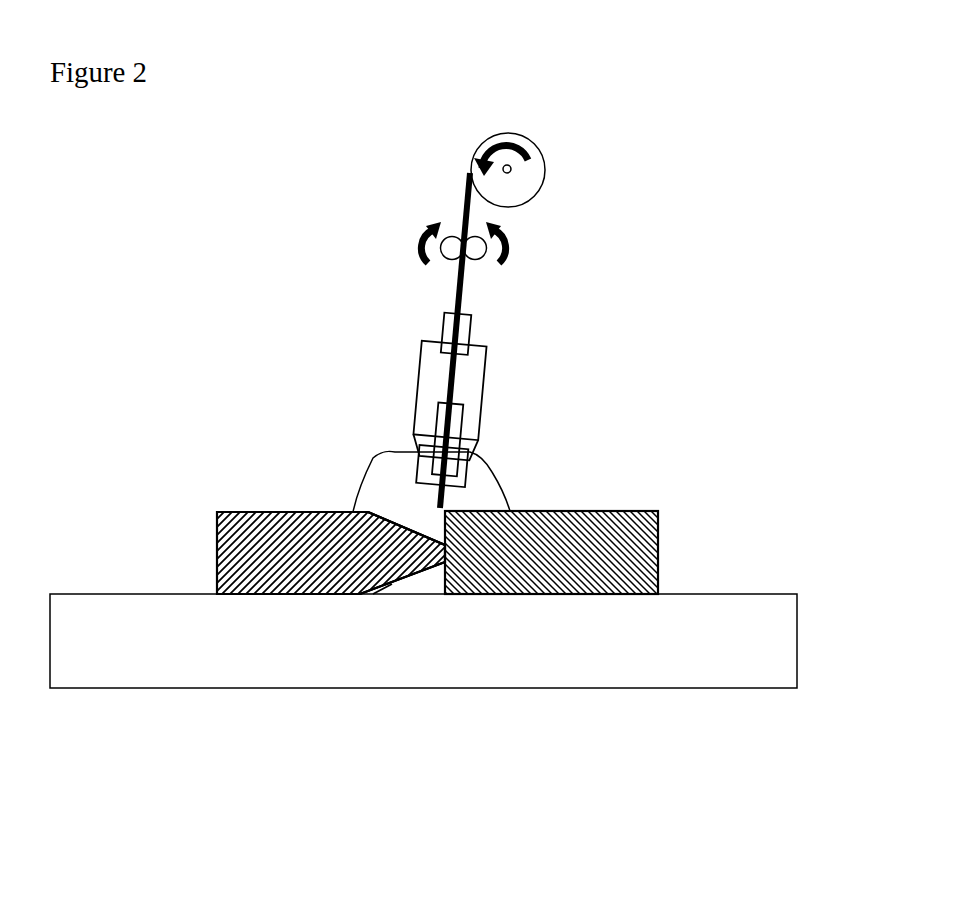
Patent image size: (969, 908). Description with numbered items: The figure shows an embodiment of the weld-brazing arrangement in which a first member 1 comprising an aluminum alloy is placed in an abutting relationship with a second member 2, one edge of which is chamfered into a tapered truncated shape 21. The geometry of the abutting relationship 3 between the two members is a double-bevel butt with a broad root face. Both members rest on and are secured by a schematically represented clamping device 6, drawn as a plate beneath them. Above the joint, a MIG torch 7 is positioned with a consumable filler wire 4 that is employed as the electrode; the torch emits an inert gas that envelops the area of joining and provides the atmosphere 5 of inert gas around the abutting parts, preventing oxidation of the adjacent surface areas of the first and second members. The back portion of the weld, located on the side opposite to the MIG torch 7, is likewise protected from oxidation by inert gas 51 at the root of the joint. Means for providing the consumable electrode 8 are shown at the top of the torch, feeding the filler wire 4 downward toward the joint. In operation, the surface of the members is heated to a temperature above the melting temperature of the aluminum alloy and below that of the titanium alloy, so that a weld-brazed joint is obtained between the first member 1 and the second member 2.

The first member 1 is at (577, 512).
The second member 2 is at (265, 512).
The tapered truncated shape 21 is at (385, 555).
The abutting relationship 3 is at (422, 530).
The consumable filler wire 4 is at (507, 248).
The atmosphere of inert gas 5 is at (478, 495).
The inert gas 51 is at (422, 587).
The clamping device 6 is at (722, 617).
The MIG torch 7 is at (477, 375).
The means for providing the consumable electrode 8 is at (530, 137).